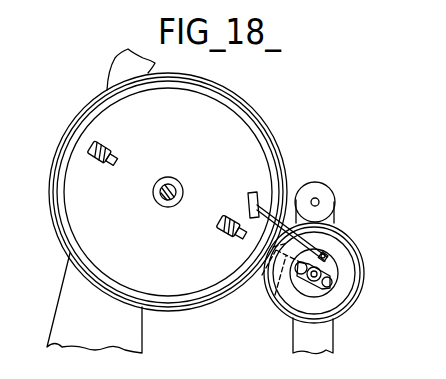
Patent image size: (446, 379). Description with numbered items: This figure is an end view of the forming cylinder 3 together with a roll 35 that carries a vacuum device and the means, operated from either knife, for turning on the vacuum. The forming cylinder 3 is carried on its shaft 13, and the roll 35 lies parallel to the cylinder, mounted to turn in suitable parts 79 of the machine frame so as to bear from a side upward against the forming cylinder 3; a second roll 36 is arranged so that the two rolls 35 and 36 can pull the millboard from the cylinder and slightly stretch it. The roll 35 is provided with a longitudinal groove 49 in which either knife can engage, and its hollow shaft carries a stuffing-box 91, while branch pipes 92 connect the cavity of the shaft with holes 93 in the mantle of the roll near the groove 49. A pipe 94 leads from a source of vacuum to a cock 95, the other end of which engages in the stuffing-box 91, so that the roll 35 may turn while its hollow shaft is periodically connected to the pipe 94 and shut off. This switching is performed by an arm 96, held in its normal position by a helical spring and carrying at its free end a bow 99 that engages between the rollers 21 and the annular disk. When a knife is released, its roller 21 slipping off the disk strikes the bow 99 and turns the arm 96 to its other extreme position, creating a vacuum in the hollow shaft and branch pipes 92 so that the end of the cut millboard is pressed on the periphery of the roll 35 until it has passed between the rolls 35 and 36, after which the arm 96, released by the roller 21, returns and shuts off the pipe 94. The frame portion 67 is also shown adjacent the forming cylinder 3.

The forming cylinder 3 is at (78, 110).
The shaft of the cylinder 13 is at (158, 195).
The roller 21 is at (112, 150).
The frame 67 is at (72, 305).
The bow 99 is at (251, 195).
The roll 36 is at (322, 183).
The longitudinal groove 49 is at (292, 188).
The roll 35 is at (366, 267).
The stuffing-box 91 is at (336, 278).
The branch pipes 92 is at (275, 295).
The holes 93 is at (262, 275).
The pipe 94 is at (318, 280).
The cock 95 is at (332, 282).
The arm 96 is at (327, 257).
The parts of the machine frame 79 is at (320, 338).